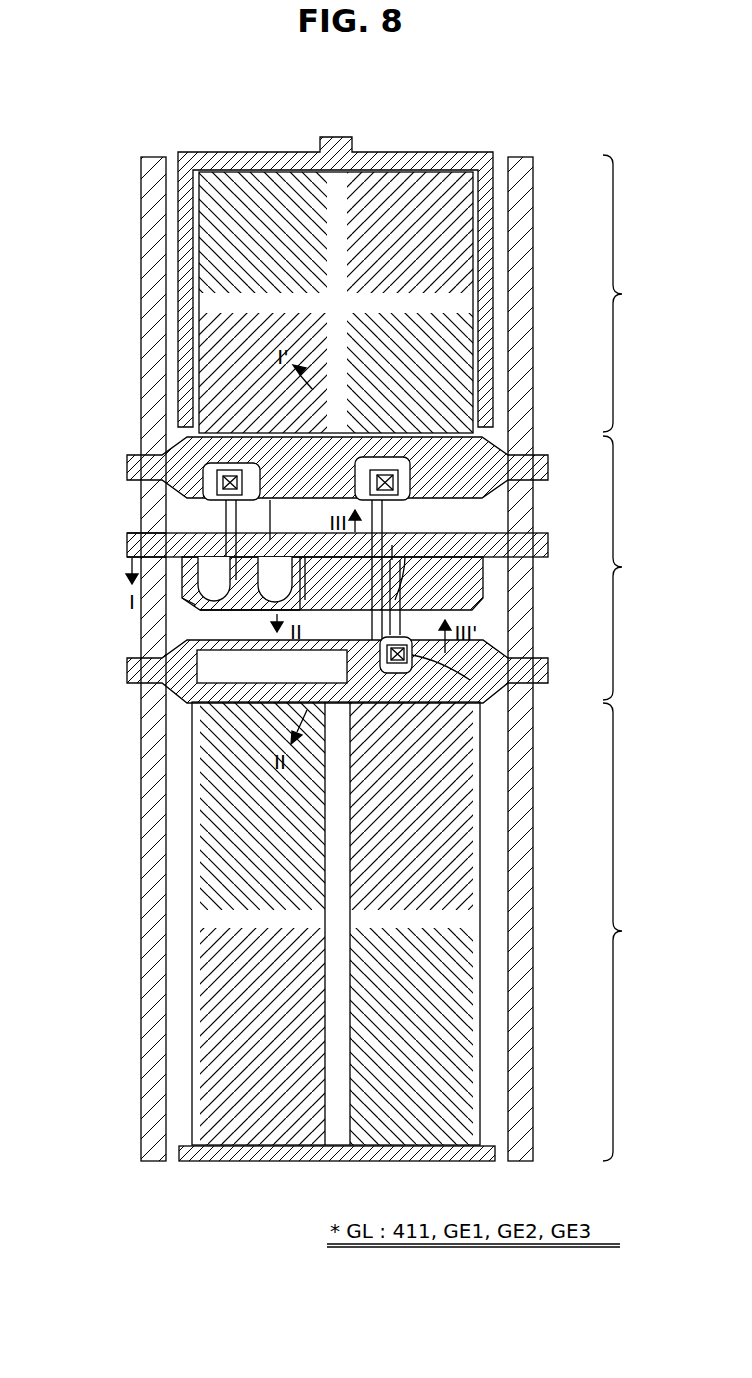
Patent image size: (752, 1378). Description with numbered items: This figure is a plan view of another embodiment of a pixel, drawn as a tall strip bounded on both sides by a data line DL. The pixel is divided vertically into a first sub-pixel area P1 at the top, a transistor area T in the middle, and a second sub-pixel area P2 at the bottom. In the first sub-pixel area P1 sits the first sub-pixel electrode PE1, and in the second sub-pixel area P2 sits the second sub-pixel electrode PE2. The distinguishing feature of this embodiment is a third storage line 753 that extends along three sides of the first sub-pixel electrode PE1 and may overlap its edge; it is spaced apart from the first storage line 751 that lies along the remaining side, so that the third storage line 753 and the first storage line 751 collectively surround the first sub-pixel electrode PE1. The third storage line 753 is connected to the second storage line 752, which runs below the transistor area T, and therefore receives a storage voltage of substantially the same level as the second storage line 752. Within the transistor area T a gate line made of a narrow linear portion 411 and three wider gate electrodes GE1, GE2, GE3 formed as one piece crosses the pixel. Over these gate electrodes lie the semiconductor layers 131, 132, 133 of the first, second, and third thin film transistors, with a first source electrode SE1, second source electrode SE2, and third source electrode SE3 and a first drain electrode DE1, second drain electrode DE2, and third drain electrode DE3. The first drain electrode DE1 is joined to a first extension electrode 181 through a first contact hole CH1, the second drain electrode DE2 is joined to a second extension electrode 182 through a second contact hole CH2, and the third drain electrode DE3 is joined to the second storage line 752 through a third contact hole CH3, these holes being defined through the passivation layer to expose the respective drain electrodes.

The third storage line 753 is at (236, 152).
The first storage line 751 is at (127, 462).
The second storage line 752 is at (127, 665).
The first extension electrode 181 is at (203, 480).
The second extension electrode 182 is at (400, 685).
The first semiconductor pattern 131 is at (180, 615).
The second semiconductor pattern 132 is at (228, 512).
The third semiconductor pattern 133 is at (405, 567).
The linear portion 411 is at (127, 540).
The data line DL is at (520, 157).
The first sub-pixel electrode PE1 is at (212, 306).
The second sub-pixel electrode PE2 is at (212, 916).
The first contact hole CH1 is at (205, 475).
The second contact hole CH2 is at (395, 483).
The third contact hole CH3 is at (405, 655).
The first drain electrode DE1 is at (150, 530).
The second drain electrode DE2 is at (300, 503).
The third drain electrode DE3 is at (420, 578).
The first source electrode SE1 is at (190, 604).
The second source electrode SE2 is at (310, 555).
The third source electrode SE3 is at (392, 545).
The first gate electrode GE1 is at (250, 603).
The second gate electrode GE2 is at (333, 597).
The third gate electrode GE3 is at (437, 603).
The first sub-pixel area P1 is at (625, 293).
The second sub-pixel area P2 is at (625, 932).
The transistor area T is at (621, 568).